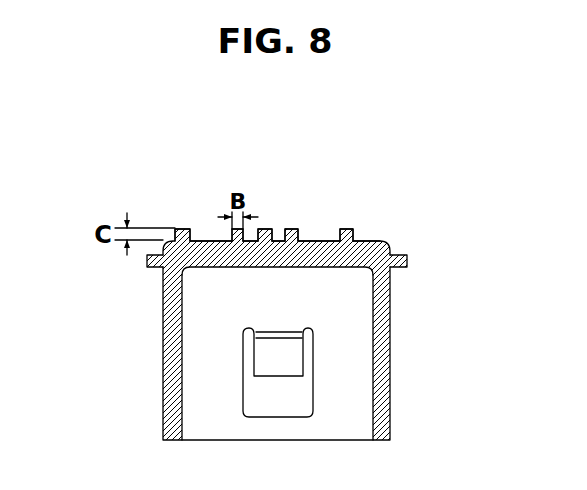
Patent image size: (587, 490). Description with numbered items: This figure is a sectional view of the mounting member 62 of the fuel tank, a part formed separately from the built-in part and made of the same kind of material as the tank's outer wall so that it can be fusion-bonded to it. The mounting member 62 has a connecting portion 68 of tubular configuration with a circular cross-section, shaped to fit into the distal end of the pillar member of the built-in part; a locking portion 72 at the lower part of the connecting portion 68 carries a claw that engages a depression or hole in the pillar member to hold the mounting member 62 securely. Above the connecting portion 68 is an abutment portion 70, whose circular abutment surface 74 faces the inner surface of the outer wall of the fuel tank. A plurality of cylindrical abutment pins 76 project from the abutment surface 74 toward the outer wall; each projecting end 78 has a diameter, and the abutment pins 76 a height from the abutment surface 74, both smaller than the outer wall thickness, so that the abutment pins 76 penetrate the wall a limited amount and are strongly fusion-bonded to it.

The mounting member 62 is at (402, 320).
The connecting portion 68 is at (163, 352).
The abutment portion 70 is at (157, 268).
The locking portion 72 is at (278, 365).
The abutment surface 74 is at (207, 226).
The abutment pin 76 is at (290, 229).
The projecting end 78 is at (183, 226).